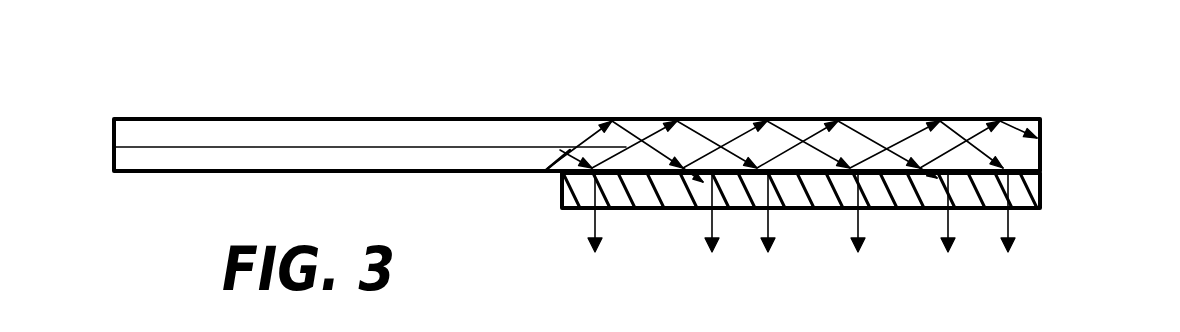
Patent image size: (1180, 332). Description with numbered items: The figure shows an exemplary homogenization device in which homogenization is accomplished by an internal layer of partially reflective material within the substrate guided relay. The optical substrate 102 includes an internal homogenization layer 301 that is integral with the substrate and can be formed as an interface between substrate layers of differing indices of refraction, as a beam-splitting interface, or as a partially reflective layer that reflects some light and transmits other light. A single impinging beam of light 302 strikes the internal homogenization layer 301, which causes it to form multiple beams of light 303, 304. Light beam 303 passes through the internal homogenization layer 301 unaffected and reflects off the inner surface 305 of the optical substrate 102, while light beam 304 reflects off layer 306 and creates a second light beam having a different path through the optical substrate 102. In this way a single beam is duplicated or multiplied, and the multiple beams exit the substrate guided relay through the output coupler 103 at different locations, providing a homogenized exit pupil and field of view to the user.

The optical substrate 102 is at (1044, 149).
The output coupler 103 is at (1044, 186).
The internal homogenization layer 301 is at (296, 147).
The single impinging beam of light 302 is at (560, 150).
The light beam 303 is at (585, 140).
The light beam 304 is at (552, 168).
The inner surface 305 is at (627, 128).
The layer 306 is at (646, 211).